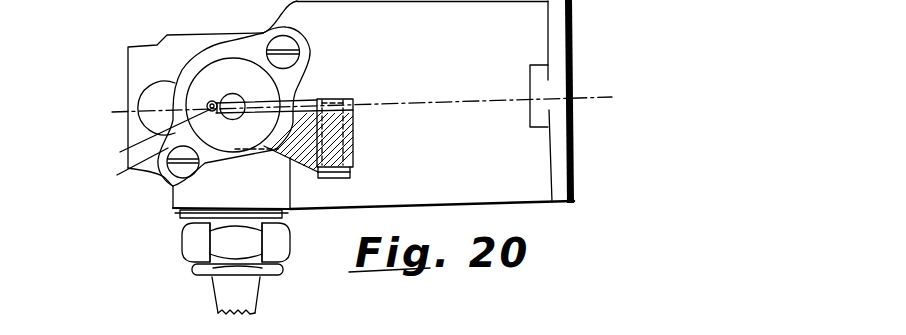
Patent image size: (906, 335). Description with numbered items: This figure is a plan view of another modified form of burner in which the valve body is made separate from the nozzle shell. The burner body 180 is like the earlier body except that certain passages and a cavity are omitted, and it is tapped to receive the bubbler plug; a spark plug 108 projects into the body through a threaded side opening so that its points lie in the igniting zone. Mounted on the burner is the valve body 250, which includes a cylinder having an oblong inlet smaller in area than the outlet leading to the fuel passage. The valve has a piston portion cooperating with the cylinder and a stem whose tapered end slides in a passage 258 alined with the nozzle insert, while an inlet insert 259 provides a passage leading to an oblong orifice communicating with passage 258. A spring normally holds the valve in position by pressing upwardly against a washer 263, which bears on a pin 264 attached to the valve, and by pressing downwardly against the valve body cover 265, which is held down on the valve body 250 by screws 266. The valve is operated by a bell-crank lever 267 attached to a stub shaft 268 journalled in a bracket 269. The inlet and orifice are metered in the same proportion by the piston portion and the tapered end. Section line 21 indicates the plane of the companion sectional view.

The section line 21- 21 is at (112, 112).
The spark plug 108 is at (218, 292).
The burner body 180 is at (444, 196).
The valve body 250 is at (149, 96).
The passage 258 is at (571, 329).
The inlet insert 259 is at (316, 173).
The washer 263 is at (122, 173).
The pin 264 is at (122, 152).
The valve body cover 265 is at (296, 72).
The screws 266 is at (285, 42).
The bell-crank lever 267 is at (310, 97).
The stub shaft 268 is at (348, 179).
The bracket 269 is at (348, 132).